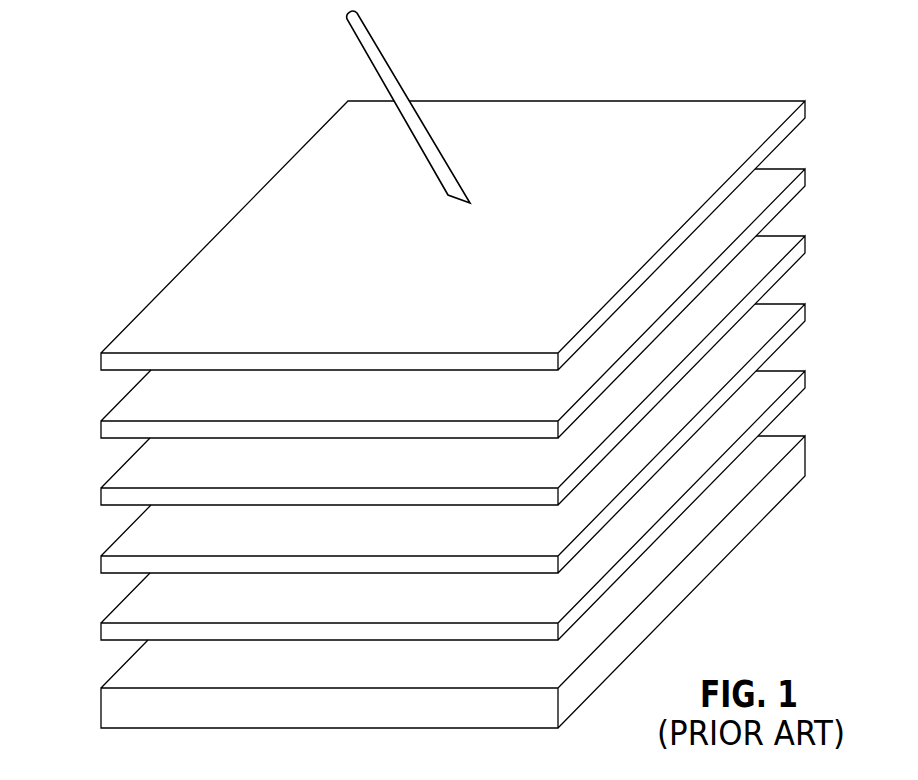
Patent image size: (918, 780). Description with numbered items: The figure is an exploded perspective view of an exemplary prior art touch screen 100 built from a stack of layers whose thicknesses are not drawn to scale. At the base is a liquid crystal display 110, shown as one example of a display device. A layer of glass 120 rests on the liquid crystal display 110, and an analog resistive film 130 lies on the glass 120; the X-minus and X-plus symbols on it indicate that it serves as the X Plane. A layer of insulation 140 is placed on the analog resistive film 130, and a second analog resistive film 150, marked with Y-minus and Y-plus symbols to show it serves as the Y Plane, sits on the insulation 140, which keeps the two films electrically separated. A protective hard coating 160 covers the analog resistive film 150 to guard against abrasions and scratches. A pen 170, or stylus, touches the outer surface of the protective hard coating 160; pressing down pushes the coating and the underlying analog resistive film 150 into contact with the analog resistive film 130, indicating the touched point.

The touch screen 100 is at (100, 114).
The liquid crystal display 110 is at (100, 705).
The glass 120 is at (100, 633).
The analog resistive film 130 is at (100, 566).
The insulation 140 is at (100, 498).
The analog resistive film 150 is at (100, 431).
The protective hard coating 160 is at (100, 363).
The pen 170 is at (346, 13).